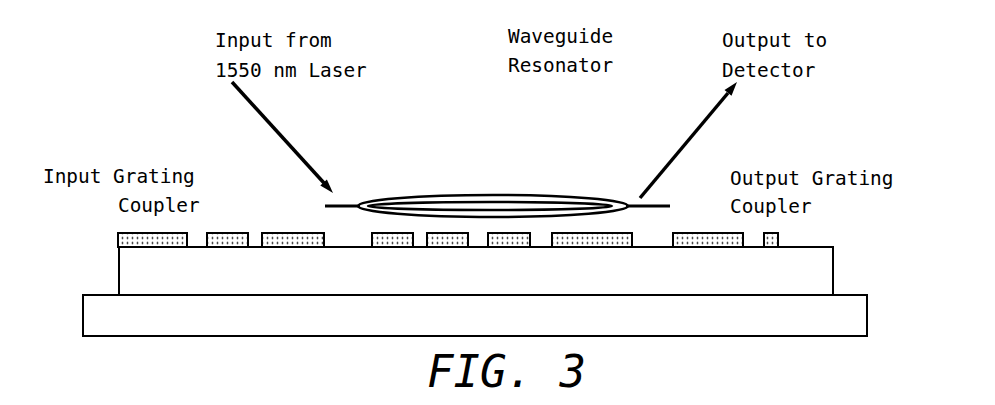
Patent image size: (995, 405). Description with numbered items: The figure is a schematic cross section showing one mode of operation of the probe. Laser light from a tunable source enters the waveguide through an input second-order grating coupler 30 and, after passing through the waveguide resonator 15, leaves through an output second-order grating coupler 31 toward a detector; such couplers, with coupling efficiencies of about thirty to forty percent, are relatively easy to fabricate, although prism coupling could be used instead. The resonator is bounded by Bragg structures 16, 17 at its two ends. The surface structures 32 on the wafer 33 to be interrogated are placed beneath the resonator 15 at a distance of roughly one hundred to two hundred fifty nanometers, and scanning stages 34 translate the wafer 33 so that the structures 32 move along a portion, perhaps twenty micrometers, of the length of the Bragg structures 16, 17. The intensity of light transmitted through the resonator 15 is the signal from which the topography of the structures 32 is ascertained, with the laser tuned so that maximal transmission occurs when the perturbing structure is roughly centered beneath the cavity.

The resonator 15 is at (483, 196).
The Bragg structure 16 is at (393, 200).
The Bragg structure 17 is at (590, 201).
The second-order grating coupler 30 is at (326, 205).
The second-order grating coupler 31 is at (667, 204).
The structures 32 is at (238, 244).
The wafer 33 is at (156, 282).
The scanning stages 34 is at (349, 330).